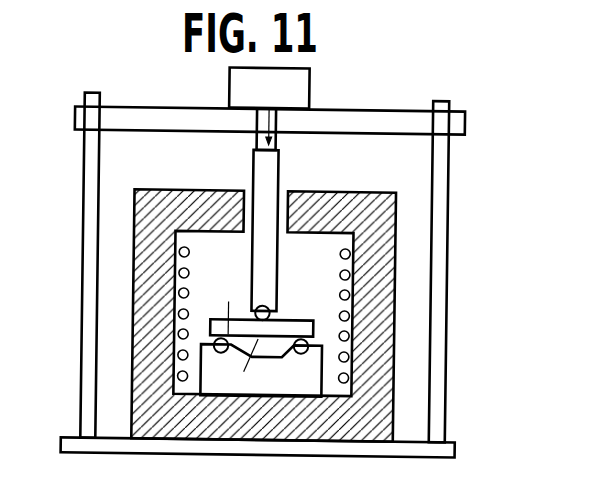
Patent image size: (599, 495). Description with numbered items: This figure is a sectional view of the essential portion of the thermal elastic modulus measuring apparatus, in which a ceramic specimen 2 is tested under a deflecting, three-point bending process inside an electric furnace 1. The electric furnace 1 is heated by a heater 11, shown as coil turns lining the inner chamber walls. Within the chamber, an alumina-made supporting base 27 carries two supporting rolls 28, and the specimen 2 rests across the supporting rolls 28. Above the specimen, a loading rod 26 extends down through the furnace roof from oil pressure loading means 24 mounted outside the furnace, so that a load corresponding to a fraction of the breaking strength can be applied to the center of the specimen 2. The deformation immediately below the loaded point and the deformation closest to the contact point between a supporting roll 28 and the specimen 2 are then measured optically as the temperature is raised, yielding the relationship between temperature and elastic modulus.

The electric furnace 1 is at (396, 240).
The specimen 2 is at (300, 318).
The heater 11 is at (178, 294).
The oil pressure loading means 24 is at (307, 88).
The loading rod 26 is at (278, 268).
The supporting base 27 is at (305, 385).
The supporting rolls 28 is at (309, 343).